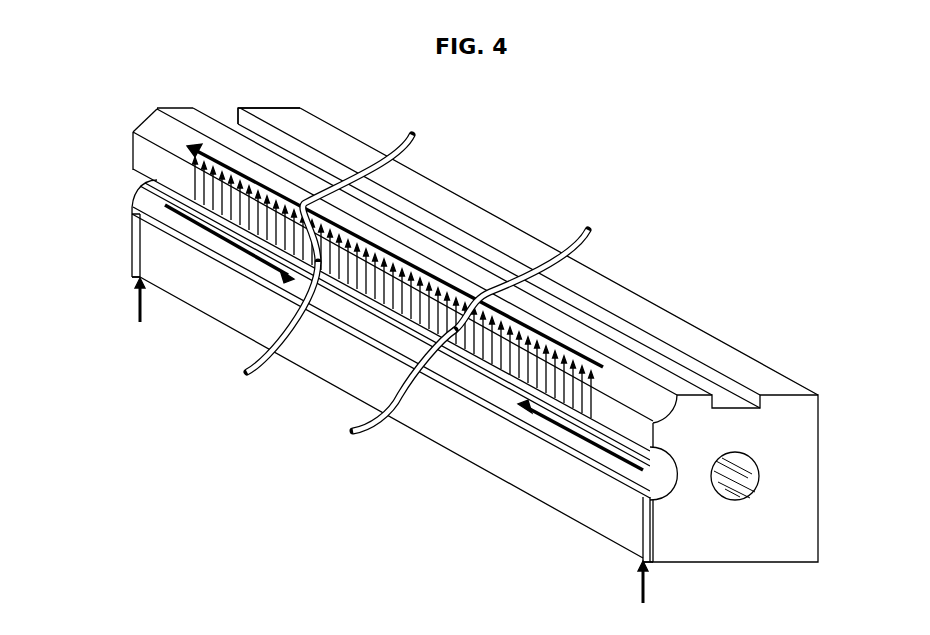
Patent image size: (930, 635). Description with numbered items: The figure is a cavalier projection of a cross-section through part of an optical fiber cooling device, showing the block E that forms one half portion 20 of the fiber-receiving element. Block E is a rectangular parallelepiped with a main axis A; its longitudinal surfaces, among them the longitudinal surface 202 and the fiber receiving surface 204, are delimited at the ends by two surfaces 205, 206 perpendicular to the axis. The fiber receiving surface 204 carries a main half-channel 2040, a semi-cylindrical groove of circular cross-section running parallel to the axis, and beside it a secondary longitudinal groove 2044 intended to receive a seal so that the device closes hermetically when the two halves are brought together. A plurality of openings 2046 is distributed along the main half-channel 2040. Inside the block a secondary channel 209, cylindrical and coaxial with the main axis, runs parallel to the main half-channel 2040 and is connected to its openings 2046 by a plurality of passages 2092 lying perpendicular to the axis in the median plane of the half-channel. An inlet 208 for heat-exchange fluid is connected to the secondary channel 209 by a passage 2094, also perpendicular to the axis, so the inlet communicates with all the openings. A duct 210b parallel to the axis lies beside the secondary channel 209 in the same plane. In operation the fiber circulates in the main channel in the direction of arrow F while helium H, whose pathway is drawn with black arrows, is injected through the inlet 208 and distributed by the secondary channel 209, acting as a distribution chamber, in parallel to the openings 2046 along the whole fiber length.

The portion 20 is at (327, 127).
The longitudinal surface 202 is at (327, 383).
The fiber receiving surface 204 is at (433, 197).
The main half-channel 2040 is at (153, 124).
The secondary longitudinal groove 2044 is at (260, 132).
The opening 2046 is at (456, 222).
The surface 205 is at (163, 103).
The surface 206 is at (800, 462).
The inlet 208 is at (136, 282).
The secondary channel 209 is at (577, 443).
The passage 2092 is at (327, 353).
The passage 2094 is at (132, 227).
The duct 210b is at (747, 478).
The block E is at (362, 143).
The arrow F is at (428, 262).
The helium H is at (137, 312).